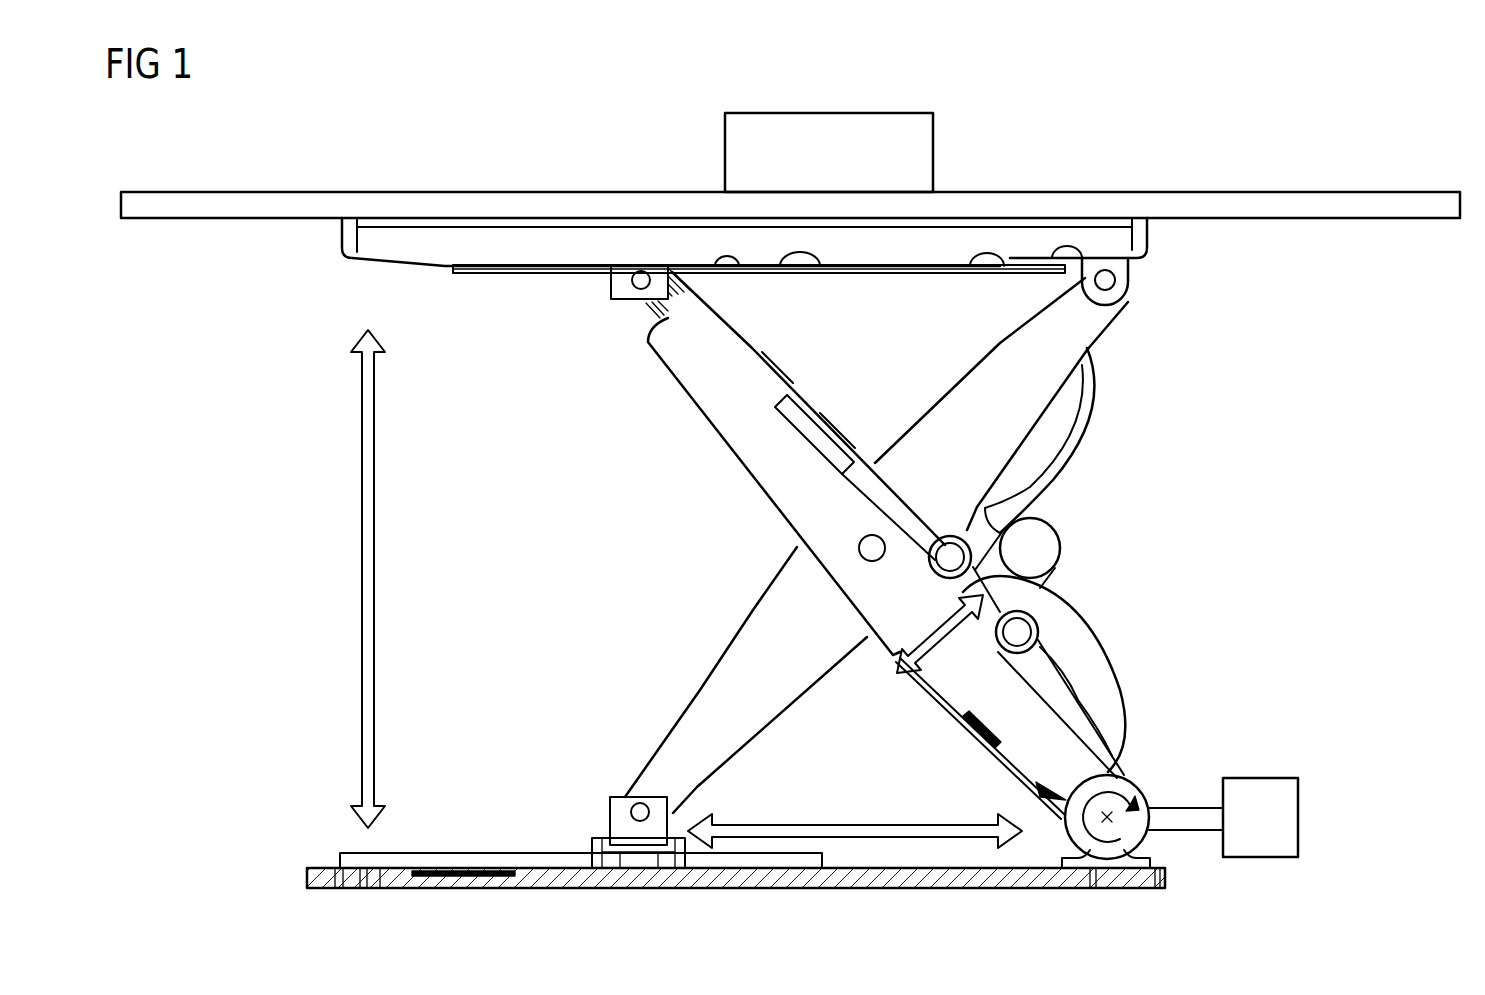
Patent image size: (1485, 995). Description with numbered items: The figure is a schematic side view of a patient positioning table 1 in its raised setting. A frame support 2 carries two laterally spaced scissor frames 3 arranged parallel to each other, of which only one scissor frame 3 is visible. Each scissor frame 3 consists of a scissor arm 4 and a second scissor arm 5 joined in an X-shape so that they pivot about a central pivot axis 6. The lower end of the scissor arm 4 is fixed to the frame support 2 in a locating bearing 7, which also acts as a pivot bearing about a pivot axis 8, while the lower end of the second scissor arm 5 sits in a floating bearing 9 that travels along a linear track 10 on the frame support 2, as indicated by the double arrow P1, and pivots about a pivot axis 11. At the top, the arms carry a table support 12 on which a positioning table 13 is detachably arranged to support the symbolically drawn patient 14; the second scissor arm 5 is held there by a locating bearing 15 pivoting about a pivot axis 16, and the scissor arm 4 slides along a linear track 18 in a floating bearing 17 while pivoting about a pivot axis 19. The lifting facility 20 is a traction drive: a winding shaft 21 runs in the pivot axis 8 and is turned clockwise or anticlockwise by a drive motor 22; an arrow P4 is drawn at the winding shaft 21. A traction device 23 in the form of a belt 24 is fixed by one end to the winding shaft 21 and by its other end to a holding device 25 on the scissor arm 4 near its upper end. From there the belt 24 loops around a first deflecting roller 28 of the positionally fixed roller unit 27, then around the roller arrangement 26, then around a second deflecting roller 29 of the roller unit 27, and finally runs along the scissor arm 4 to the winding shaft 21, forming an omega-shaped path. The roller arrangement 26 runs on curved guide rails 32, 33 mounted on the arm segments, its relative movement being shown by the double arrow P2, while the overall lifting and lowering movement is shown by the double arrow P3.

The patient positioning table 1 is at (1340, 170).
The frame support 2 is at (878, 880).
The scissor frame 3 is at (1172, 395).
The scissor arm 4 is at (712, 378).
The second scissor arm 5 is at (677, 732).
The central pivot axis 6 is at (872, 548).
The locating bearing 7 is at (1087, 870).
The pivot axis 8 is at (1108, 822).
The floating bearing 9 is at (648, 835).
The linear track 10 is at (742, 862).
The pivot axis 11 is at (630, 813).
The table support 12 is at (903, 253).
The positioning table 13 is at (548, 197).
The patient 14 is at (785, 128).
The locating bearing 15 is at (1120, 275).
The pivot axis 16 is at (1106, 282).
The floating bearing 17 is at (600, 297).
The linear track 18 is at (522, 277).
The pivot axis 19 is at (641, 283).
The lifting facility 20 is at (1230, 737).
The winding shaft 21 is at (1150, 783).
The drive motor 22 is at (1300, 818).
The traction device 23 is at (1020, 710).
The belt 24 is at (1073, 723).
The holding device 25 is at (790, 415).
The roller arrangement 26 is at (1082, 531).
The roller unit 27 is at (910, 593).
The first deflecting roller 28 is at (950, 557).
The second deflecting roller 29 is at (1017, 632).
The guide rail 32 is at (1083, 405).
The guide rail 33 is at (1090, 657).
The double arrow P1 is at (853, 827).
The double arrow P2 is at (947, 630).
The double arrow P3 is at (365, 520).
The motor rotation direction P4 is at (1152, 722).